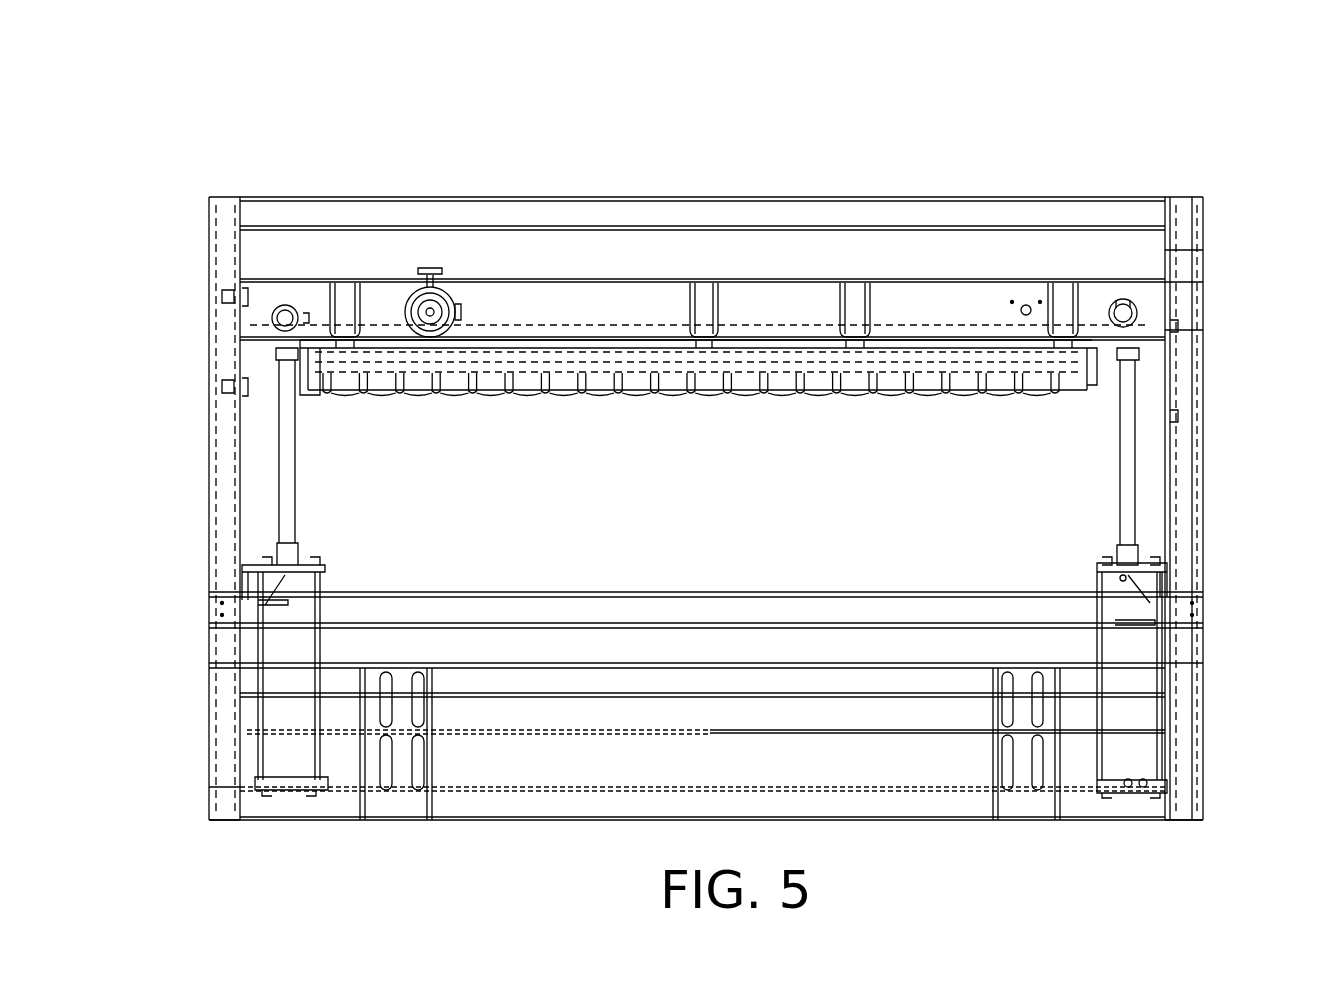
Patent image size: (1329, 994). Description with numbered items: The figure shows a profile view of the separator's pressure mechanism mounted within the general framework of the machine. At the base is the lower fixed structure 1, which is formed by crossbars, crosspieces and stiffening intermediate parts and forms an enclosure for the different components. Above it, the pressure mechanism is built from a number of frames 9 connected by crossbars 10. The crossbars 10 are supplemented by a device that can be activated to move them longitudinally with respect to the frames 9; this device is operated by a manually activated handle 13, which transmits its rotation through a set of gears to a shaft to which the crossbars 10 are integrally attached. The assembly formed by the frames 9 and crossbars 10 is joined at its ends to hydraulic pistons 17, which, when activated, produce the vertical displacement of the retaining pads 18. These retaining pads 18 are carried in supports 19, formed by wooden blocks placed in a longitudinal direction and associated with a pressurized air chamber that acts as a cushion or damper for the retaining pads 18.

The lower fixed structure 1 is at (1197, 755).
The frames 9 is at (1020, 300).
The crossbars 10 is at (848, 300).
The manually activated handle 13 is at (430, 312).
The hydraulic pistons 17 is at (285, 725).
The retaining pads 18 is at (755, 393).
The supports (wooden blocks) 19 is at (1083, 367).